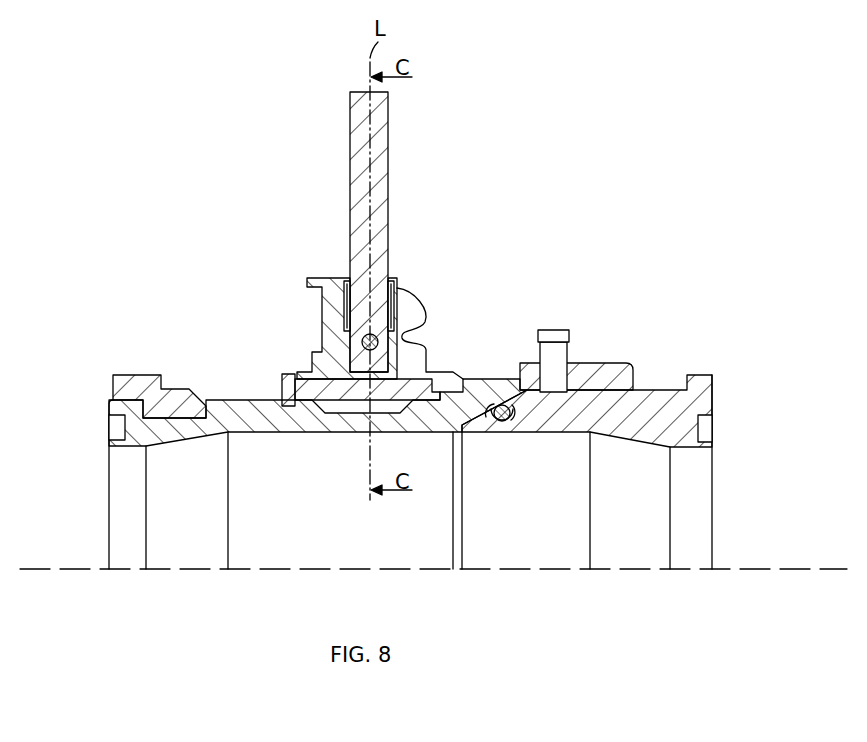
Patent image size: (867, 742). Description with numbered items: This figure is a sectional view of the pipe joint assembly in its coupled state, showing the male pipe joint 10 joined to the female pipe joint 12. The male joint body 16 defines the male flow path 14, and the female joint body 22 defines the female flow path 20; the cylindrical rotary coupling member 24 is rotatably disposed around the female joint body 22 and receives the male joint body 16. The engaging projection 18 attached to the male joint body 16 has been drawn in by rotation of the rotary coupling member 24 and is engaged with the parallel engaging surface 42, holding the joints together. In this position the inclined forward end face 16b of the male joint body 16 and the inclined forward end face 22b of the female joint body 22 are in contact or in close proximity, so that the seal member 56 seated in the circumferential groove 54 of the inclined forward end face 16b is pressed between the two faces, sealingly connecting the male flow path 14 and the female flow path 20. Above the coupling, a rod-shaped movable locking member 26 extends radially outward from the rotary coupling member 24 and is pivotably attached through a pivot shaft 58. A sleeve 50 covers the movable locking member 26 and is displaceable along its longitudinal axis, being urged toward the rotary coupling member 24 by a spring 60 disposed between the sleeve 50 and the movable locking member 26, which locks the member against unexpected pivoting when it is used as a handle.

The male pipe joint 10 is at (703, 366).
The female pipe joint 12 is at (127, 366).
The male flow path 14 is at (561, 559).
The male joint body 16 is at (648, 415).
The inclined forward end face 16b is at (506, 398).
The engaging projection 18 is at (549, 358).
The female flow path 20 is at (307, 559).
The female joint body 22 is at (267, 420).
The inclined forward end face 22b is at (486, 412).
The rotary coupling member 24 is at (322, 392).
The movable locking member 26 is at (360, 118).
The parallel engaging surface 42 is at (572, 347).
The sleeve 50 is at (333, 296).
The circumferential groove 54 is at (504, 410).
The seal member 56 is at (494, 404).
The pivot shaft 58 is at (403, 300).
The spring 60 is at (348, 283).